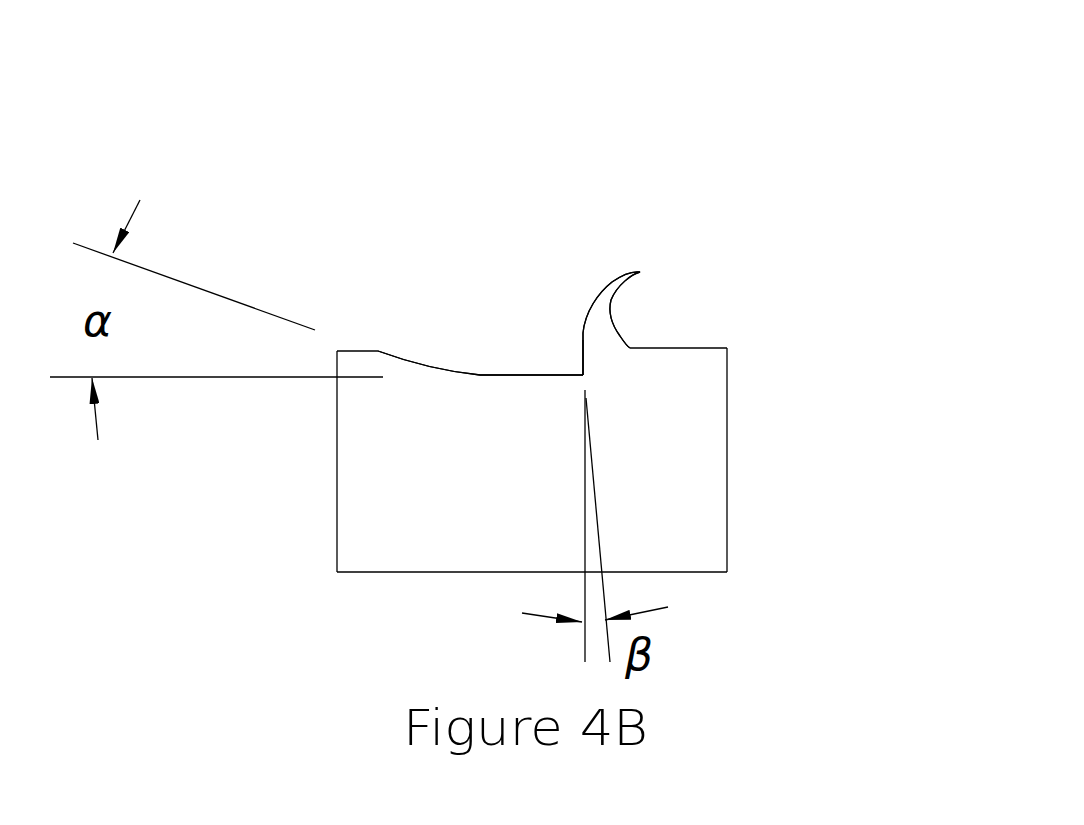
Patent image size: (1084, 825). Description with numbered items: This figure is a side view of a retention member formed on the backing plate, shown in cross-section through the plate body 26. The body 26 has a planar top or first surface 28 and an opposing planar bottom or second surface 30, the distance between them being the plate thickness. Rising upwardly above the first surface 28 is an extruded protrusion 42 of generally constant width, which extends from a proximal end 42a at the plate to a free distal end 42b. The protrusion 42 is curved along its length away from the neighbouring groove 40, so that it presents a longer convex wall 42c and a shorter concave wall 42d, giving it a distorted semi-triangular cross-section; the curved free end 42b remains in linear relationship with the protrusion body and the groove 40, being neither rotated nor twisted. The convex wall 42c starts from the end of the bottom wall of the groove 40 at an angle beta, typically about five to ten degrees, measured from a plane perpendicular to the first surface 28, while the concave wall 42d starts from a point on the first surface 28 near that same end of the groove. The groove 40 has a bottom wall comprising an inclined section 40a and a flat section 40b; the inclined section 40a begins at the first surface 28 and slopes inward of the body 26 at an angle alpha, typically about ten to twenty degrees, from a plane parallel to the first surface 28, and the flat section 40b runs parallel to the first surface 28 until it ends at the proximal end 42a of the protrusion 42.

The body 26 is at (727, 440).
The first surface 28 is at (700, 348).
The second surface 30 is at (720, 574).
The groove 40 is at (485, 375).
The inclined section 40a is at (412, 368).
The flat section 40b is at (522, 378).
The protrusion 42 is at (595, 290).
The proximal end 42a is at (613, 360).
The free distal end 42b is at (638, 270).
The convex wall 42c is at (580, 335).
The concave wall 42d is at (612, 312).